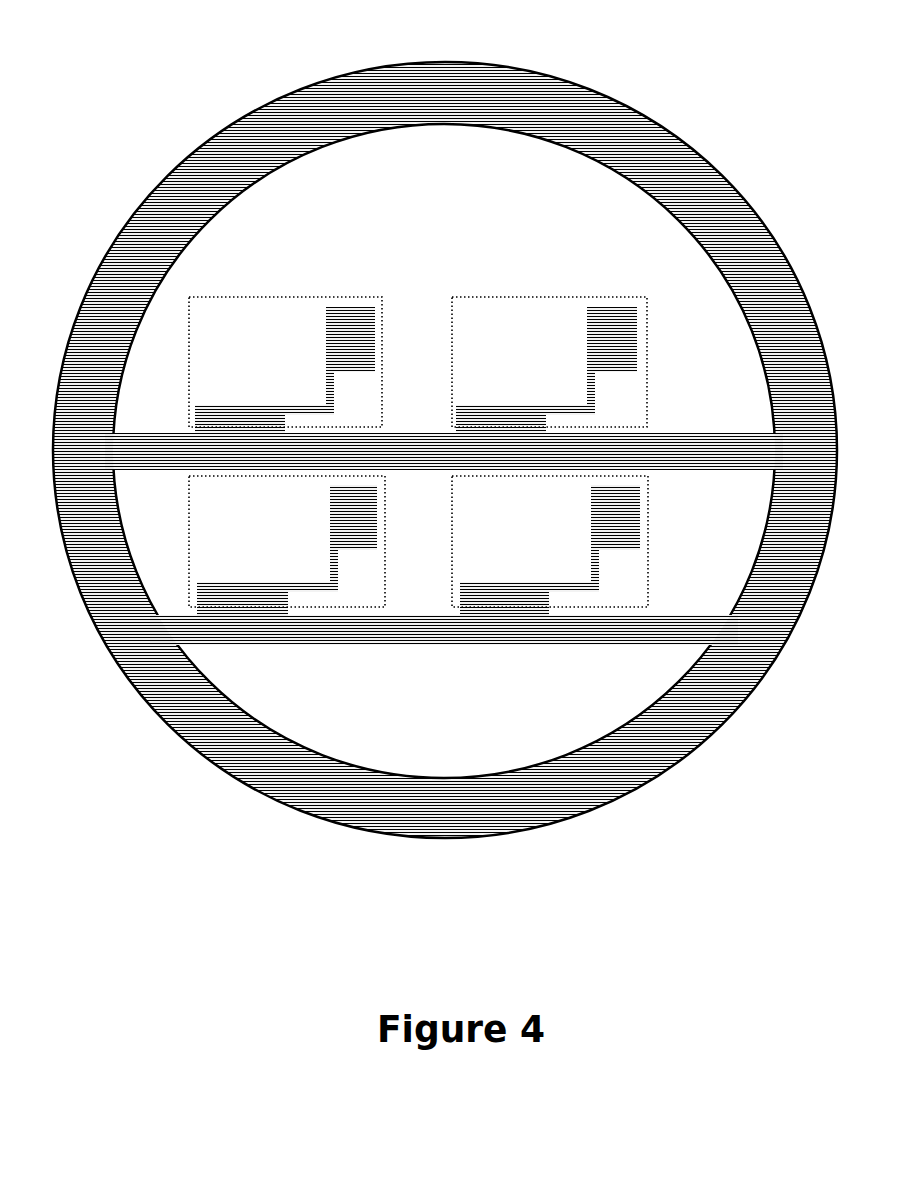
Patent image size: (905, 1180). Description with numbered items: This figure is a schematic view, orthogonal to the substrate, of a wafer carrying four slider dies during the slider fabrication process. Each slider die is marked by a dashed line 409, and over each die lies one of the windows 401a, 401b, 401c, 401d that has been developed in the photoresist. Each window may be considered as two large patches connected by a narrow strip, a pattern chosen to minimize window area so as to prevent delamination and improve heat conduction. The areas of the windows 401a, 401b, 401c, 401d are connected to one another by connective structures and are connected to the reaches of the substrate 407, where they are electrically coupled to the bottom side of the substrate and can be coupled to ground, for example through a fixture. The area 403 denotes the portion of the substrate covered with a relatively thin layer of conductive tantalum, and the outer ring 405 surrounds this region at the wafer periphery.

The window 401a is at (350, 337).
The window 401b is at (612, 337).
The window 401c is at (616, 515).
The window 401d is at (353, 515).
The area 403 is at (718, 362).
The edge exclusion ring 405 is at (722, 688).
The substrate 407 is at (215, 136).
The dashed line 409 is at (188, 362).